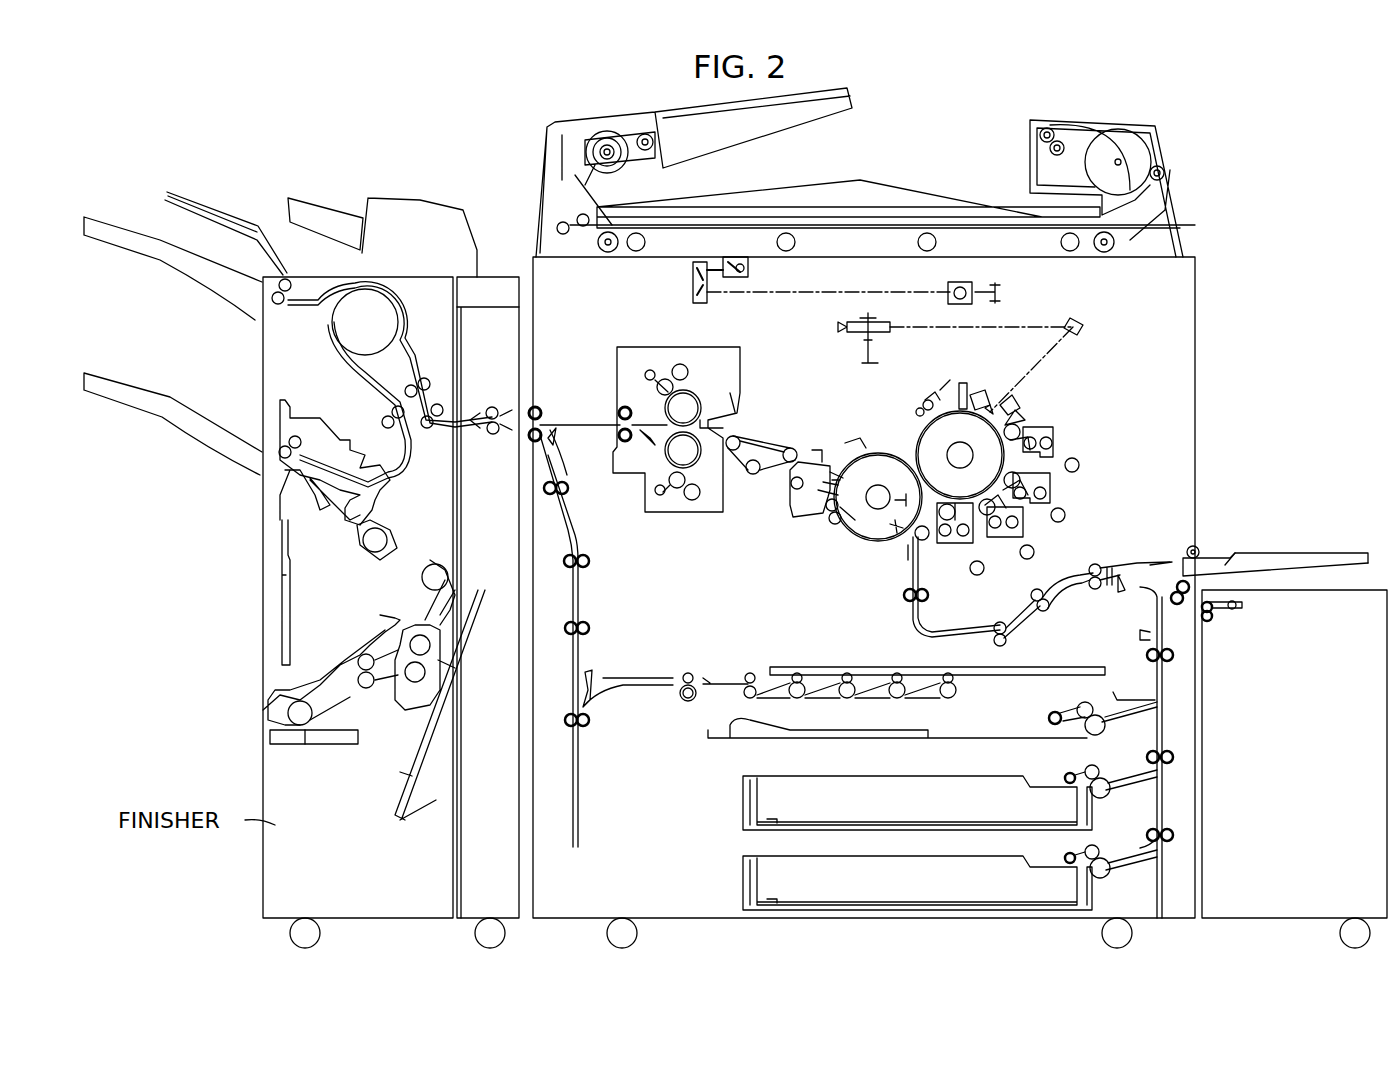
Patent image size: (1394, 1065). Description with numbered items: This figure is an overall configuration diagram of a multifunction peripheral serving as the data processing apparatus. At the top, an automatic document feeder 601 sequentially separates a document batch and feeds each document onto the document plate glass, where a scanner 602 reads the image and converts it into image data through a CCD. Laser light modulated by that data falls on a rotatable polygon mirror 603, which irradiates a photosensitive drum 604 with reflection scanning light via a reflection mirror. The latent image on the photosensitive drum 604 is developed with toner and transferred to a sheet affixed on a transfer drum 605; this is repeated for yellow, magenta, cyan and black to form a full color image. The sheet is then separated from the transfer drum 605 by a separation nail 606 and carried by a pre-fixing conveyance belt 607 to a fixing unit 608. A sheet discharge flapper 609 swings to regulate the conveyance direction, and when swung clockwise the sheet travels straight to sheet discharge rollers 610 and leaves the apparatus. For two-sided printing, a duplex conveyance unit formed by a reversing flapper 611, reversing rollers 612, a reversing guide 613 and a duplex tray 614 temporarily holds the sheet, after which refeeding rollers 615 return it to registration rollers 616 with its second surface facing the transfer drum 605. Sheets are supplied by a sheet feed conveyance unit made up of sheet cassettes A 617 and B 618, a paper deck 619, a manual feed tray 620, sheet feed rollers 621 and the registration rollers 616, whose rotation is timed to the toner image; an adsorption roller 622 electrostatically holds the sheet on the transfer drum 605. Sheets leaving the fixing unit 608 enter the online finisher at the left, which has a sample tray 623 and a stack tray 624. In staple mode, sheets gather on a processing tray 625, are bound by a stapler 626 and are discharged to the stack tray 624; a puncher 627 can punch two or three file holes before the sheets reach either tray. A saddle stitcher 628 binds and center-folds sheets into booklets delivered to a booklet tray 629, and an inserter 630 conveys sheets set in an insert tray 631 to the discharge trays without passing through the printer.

The automatic document feeder 601 is at (947, 200).
The scanner 602 is at (752, 265).
The rotatable polygon mirror 603 is at (893, 330).
The photosensitive drum 604 is at (1018, 433).
The transfer drum 605 is at (893, 462).
The separation nail 606 is at (832, 450).
The pre-fixing conveyance belt 607 is at (763, 437).
The fixing unit 608 is at (678, 364).
The sheet discharge flapper 609 is at (560, 425).
The sheet discharge rollers 610 is at (540, 410).
The reversing flapper 611 is at (595, 665).
The reversing rollers 612 is at (588, 561).
The reversing guide 613 is at (578, 760).
The duplex tray 614 is at (870, 730).
The refeeding rollers 615 is at (1052, 712).
The registration rollers 616 is at (904, 594).
The sheet cassette A 617 is at (760, 804).
The sheet cassette B 618 is at (760, 884).
The paper deck 619 is at (1340, 618).
The manual feed tray 620 is at (1218, 553).
The sheet feed rollers 621 is at (1080, 775).
The adsorption roller 622 is at (920, 542).
The sample tray 623 is at (125, 232).
The stack tray 624 is at (138, 405).
The processing tray 625 is at (300, 478).
The stapler 626 is at (310, 500).
The puncher 627 is at (355, 333).
The saddle stitcher 628 is at (415, 700).
The booklet tray 629 is at (305, 740).
The inserter 630 is at (440, 210).
The insert tray 631 is at (333, 207).